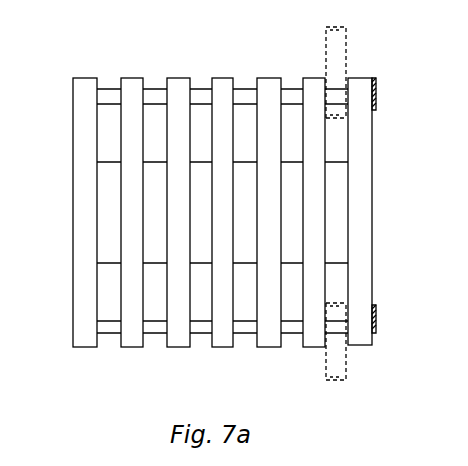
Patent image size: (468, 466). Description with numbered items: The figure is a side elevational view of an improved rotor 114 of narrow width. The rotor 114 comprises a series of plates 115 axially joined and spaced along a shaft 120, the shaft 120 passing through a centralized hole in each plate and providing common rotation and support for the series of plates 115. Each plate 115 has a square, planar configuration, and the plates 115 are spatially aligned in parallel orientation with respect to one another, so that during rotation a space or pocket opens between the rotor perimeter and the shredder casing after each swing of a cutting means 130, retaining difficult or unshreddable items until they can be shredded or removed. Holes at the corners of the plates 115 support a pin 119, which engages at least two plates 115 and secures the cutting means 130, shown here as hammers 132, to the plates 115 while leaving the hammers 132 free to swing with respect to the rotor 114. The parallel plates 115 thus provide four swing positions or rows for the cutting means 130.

The rotor 114 is at (216, 232).
The plates 115 is at (183, 350).
The pin 119 is at (376, 90).
The shaft 120 is at (110, 267).
The cutting means 130 is at (347, 62).
The hammers 132 is at (343, 53).